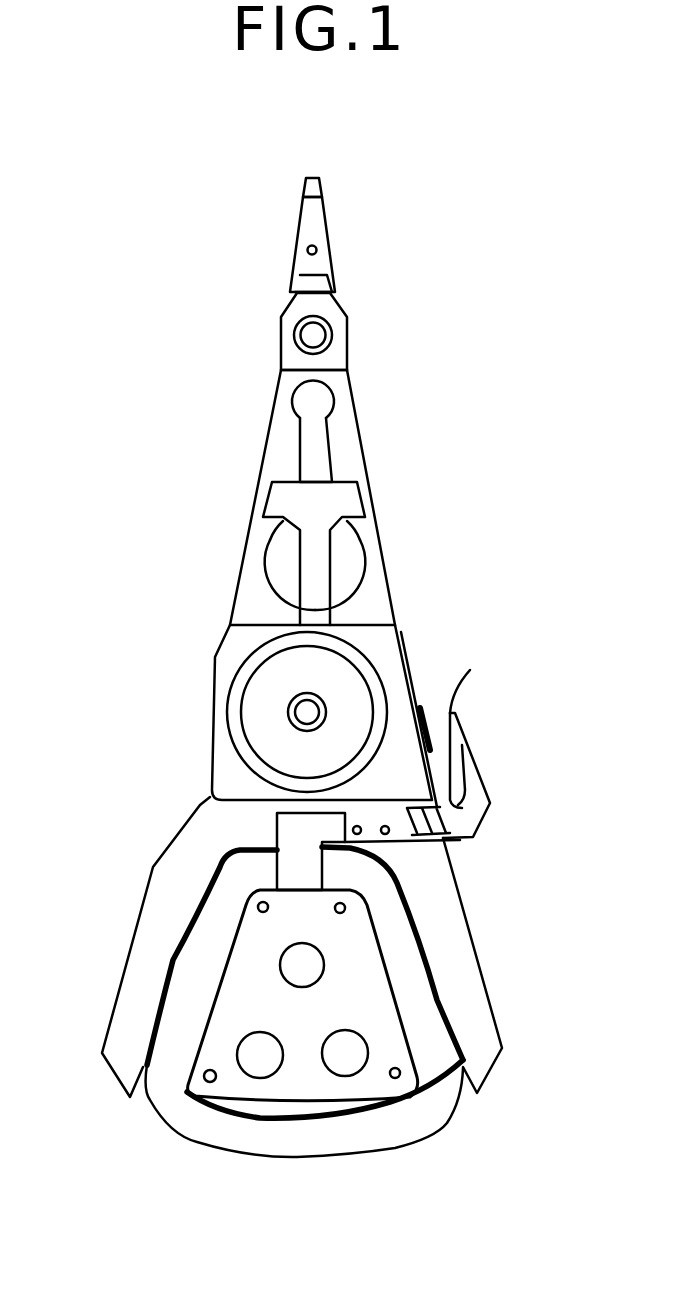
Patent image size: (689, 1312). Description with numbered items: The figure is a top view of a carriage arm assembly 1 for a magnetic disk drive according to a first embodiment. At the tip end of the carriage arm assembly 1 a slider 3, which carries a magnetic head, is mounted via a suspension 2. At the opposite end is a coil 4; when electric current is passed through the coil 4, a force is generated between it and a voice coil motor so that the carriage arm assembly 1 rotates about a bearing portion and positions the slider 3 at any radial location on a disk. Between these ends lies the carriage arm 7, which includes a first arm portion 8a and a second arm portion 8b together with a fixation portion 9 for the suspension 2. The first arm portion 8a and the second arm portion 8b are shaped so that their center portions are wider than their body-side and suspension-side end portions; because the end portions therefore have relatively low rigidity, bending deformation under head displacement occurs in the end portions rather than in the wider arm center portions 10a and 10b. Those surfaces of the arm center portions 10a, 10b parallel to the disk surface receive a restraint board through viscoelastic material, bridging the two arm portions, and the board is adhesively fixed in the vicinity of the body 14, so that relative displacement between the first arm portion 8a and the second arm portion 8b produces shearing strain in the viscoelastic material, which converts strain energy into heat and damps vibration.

The carriage arm assembly 1 is at (185, 827).
The suspension 2 is at (295, 235).
The slider 3 is at (323, 196).
The coil 4 is at (447, 1123).
The carriage arm 7 is at (232, 627).
The first arm portion 8a is at (258, 567).
The second arm portion 8b is at (370, 598).
The fixation portion 9 is at (348, 340).
The arm center portion 10a is at (275, 465).
The arm center portion 10b is at (345, 467).
The body 14 is at (217, 677).